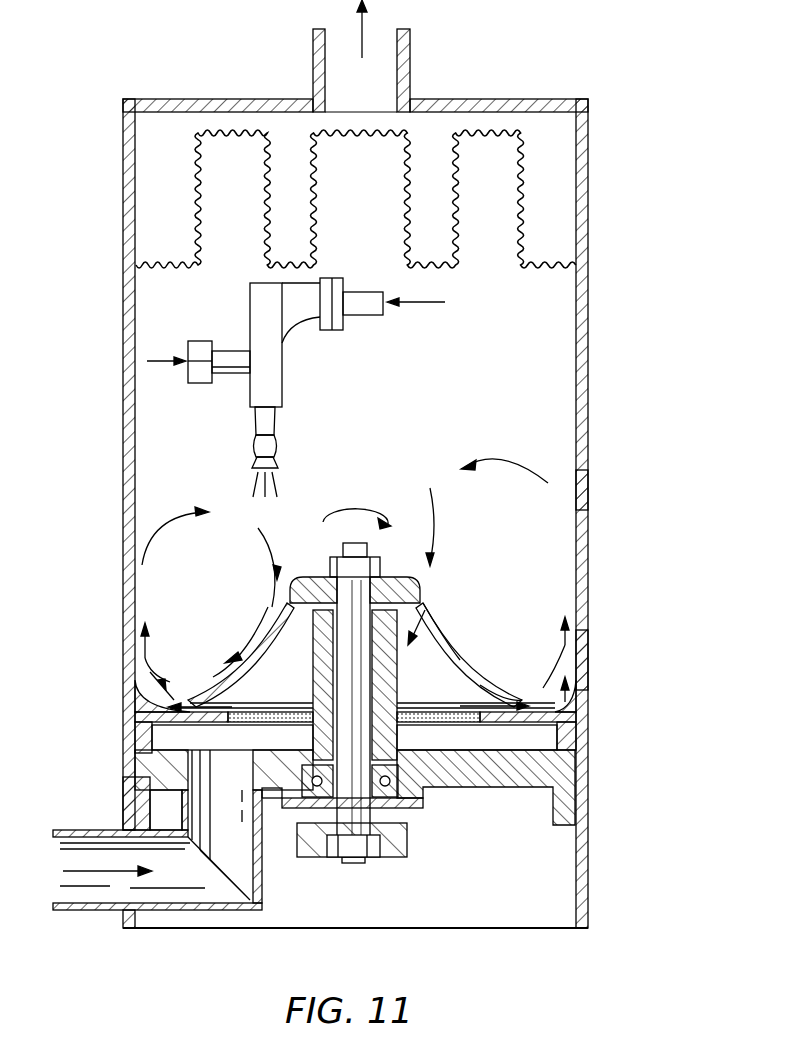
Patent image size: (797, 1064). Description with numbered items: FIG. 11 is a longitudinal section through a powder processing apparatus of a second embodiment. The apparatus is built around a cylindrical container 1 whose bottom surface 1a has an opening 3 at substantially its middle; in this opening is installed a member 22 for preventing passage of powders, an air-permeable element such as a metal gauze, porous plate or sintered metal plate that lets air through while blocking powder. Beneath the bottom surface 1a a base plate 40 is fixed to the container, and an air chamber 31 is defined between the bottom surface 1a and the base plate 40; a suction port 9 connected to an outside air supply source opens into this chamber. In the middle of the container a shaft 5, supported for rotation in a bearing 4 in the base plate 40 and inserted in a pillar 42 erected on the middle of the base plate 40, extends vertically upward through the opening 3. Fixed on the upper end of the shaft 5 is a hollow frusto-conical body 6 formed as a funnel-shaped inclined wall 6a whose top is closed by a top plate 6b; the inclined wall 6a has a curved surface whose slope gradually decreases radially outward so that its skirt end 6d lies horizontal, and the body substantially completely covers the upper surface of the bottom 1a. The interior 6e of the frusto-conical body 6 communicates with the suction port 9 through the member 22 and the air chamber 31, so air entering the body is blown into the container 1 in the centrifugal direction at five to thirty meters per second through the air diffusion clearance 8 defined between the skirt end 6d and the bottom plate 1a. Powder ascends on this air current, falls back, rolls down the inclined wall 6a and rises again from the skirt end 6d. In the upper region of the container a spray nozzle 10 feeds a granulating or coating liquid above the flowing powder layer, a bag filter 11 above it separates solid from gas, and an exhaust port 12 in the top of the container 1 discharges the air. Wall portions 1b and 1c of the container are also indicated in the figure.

The cylindrical container 1 is at (386, 513).
The bottom surface of the container 1a is at (540, 705).
The housing side wall 1b is at (568, 495).
The lower housing wall portion 1c is at (582, 650).
The opening 3 is at (246, 722).
The bearing 4 is at (413, 805).
The shaft 5 is at (356, 865).
The hollow frusto-conical body 6 is at (356, 624).
The inclined wall 6a is at (447, 652).
The top plate 6b is at (406, 575).
The skirt end 6d is at (513, 702).
The interior of the frusto-conical body 6e is at (427, 613).
The air diffusion clearance 8 is at (160, 688).
The suction port 9 is at (220, 770).
The spray nozzle 10 is at (265, 423).
The bag filter 11 is at (407, 205).
The exhaust port 12 is at (377, 70).
The member for preventing passage of powders 22 is at (443, 727).
The air chamber 31 is at (160, 738).
The base plate 40 is at (523, 770).
The pillar 42 is at (430, 792).